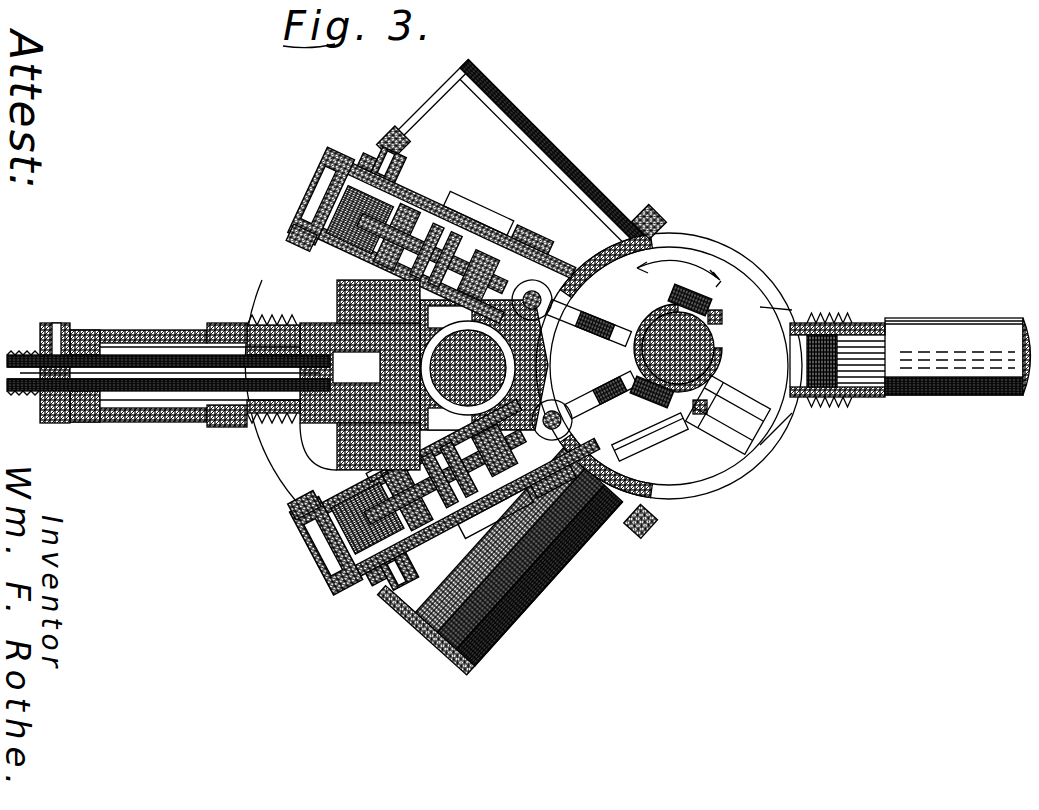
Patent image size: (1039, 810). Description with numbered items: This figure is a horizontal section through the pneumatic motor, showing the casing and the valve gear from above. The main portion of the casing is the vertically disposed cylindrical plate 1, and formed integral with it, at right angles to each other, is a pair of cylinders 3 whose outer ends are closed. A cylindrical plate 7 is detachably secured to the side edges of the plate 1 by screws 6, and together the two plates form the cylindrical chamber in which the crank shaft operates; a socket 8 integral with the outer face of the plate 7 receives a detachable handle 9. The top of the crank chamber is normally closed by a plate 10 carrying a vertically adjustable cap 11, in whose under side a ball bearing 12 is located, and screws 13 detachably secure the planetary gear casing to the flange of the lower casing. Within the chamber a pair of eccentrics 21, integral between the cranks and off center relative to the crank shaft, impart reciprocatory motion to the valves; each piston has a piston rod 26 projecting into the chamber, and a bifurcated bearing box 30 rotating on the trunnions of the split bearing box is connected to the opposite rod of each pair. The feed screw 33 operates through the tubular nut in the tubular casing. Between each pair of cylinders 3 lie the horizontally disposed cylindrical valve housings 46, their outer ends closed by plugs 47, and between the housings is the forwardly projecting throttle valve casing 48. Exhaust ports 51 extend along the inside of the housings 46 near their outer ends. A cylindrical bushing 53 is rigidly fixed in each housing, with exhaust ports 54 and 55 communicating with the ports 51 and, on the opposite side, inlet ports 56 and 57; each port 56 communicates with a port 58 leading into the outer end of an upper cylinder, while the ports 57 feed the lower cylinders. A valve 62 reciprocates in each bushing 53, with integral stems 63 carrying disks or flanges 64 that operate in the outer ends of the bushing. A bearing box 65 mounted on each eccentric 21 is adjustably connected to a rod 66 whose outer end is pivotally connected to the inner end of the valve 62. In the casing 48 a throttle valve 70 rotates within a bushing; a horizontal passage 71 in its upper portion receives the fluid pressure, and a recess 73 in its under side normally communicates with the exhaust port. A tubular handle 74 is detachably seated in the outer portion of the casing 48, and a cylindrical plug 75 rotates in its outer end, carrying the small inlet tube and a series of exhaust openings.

The cylindrical plate 1 is at (592, 226).
The cylinders 3 is at (541, 162).
The screws 6 is at (460, 132).
The cylindrical plate 7 is at (758, 242).
The socket 8 is at (830, 321).
The handle 9 is at (935, 332).
The plate 10 is at (373, 150).
The vertically adjustable cap 11 is at (398, 190).
The ball bearing 12 is at (415, 200).
The screws 13 is at (432, 228).
The eccentrics 21 is at (660, 338).
The piston rod 26 is at (612, 290).
The bifurcated bearing box 30 is at (748, 385).
The feed screw 33 is at (582, 421).
The cylindrical valve housings 46 is at (522, 272).
The plugs 47 is at (300, 208).
The throttle valve casing 48 is at (290, 425).
The exhaust ports 51 is at (365, 370).
The cylindrical bushing 53 is at (490, 238).
The exhaust port 54 is at (404, 467).
The exhaust port 55 is at (302, 238).
The inlet port 56 is at (368, 172).
The inlet port 57 is at (455, 232).
The port 58 is at (393, 130).
The valve 62 is at (515, 258).
The stems 63 is at (470, 235).
The disks or flanges 64 is at (385, 200).
The bearing box 65 is at (720, 360).
The rods 66 is at (580, 330).
The throttle valve 70 is at (335, 422).
The horizontal passage 71 is at (356, 367).
The recess 73 is at (300, 392).
The tubular handle 74 is at (165, 410).
The cylindrical plug 75 is at (58, 426).